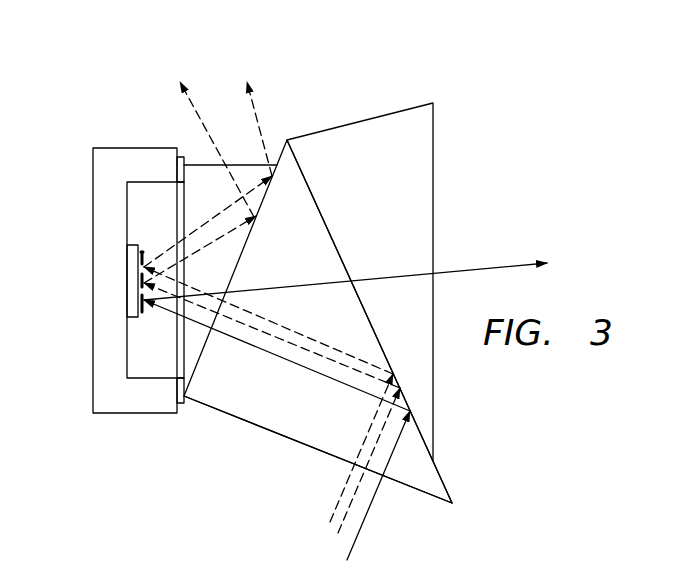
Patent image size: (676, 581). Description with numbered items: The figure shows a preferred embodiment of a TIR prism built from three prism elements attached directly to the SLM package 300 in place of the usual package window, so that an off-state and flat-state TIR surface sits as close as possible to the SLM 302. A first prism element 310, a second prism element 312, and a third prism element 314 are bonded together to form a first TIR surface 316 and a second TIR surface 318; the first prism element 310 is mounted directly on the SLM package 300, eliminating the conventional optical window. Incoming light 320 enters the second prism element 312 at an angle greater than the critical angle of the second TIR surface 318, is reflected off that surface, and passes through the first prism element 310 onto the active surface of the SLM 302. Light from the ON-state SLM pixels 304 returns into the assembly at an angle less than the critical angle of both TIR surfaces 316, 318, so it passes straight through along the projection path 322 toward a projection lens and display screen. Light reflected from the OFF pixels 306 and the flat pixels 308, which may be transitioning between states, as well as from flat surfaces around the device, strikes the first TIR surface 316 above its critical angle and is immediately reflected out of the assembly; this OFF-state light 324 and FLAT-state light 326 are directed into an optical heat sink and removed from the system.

The SLM package 300 is at (92, 205).
The SLM 302 is at (127, 325).
The ON-state SLM pixels 304 is at (146, 312).
The OFF pixels 306 is at (144, 256).
The flat pixels 308 is at (142, 277).
The first prism element 310 is at (207, 165).
The second prism element 312 is at (250, 425).
The third prism element 314 is at (433, 146).
The first TIR surface 316 is at (238, 256).
The second TIR surface 318 is at (404, 398).
The incoming light 320 is at (337, 537).
The projection path 322 is at (485, 267).
The OFF-state light 324 is at (257, 111).
The FLAT-state light 326 is at (196, 110).